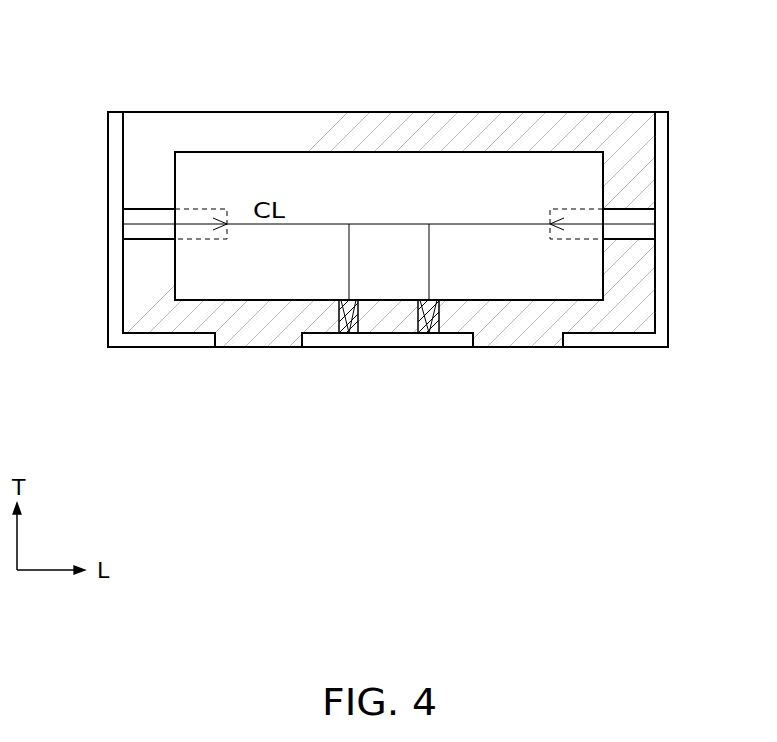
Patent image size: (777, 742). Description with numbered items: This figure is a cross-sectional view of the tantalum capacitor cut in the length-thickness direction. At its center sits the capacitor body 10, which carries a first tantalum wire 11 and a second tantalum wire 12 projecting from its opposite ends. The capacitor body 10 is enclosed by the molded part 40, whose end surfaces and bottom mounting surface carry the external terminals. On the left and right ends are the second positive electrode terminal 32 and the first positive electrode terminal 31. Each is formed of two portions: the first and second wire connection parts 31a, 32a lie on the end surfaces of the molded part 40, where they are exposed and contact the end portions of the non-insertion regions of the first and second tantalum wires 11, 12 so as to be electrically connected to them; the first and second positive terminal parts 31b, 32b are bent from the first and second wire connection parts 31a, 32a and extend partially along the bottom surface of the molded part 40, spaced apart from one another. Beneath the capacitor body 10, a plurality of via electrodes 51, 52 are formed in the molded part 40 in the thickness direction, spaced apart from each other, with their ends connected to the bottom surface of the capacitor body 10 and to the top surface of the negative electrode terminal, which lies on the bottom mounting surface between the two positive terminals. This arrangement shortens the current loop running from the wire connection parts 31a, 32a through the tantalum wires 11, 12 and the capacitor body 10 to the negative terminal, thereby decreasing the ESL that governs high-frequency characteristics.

The capacitor body 10 is at (430, 160).
The first tantalum wire 11 is at (633, 209).
The second tantalum wire 12 is at (147, 209).
The molded part 40 is at (303, 120).
The first positive electrode terminal 31 is at (650, 290).
The first wire connection part 31a is at (665, 270).
The first positive terminal part 31b is at (610, 271).
The second positive electrode terminal 32 is at (119, 290).
The second wire connection part 32a is at (110, 267).
The second positive terminal part 32b is at (172, 342).
The via electrode 51 is at (442, 310).
The via electrode 52 is at (340, 310).